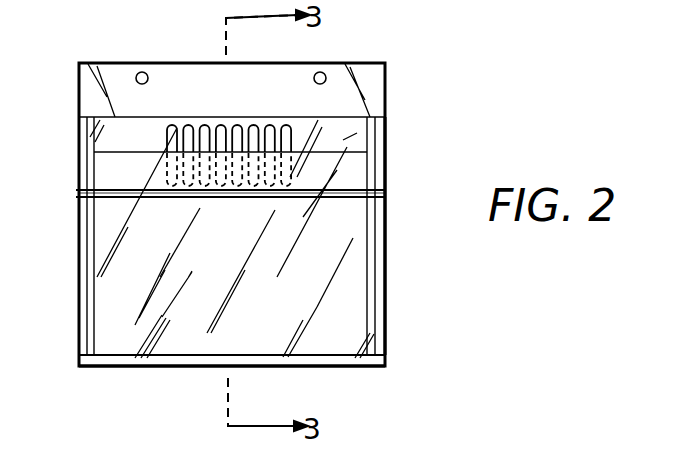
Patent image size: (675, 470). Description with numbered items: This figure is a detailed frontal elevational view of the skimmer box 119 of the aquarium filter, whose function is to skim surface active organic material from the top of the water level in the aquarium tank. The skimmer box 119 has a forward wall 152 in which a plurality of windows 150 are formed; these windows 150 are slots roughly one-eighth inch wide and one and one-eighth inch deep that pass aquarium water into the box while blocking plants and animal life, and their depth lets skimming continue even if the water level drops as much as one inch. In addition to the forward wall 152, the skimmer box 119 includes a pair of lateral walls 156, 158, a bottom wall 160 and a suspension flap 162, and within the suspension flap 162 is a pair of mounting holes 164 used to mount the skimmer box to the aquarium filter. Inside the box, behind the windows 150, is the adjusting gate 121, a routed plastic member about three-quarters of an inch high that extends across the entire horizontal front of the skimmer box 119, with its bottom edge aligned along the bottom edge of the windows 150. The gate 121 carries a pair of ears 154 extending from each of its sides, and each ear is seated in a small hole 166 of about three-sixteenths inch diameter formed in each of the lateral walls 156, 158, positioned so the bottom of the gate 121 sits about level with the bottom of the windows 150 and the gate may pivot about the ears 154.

The skimmer box 119 is at (79, 278).
The adjusting gate 121 is at (353, 162).
The windows 150 is at (293, 128).
The forward wall 152 is at (342, 320).
The ears 154 is at (79, 190).
The lateral wall 156 is at (385, 291).
The lateral wall 158 is at (79, 357).
The bottom wall 160 is at (339, 367).
The suspension flap 162 is at (380, 62).
The mounting holes 164 is at (143, 72).
The small hole 166 is at (79, 198).